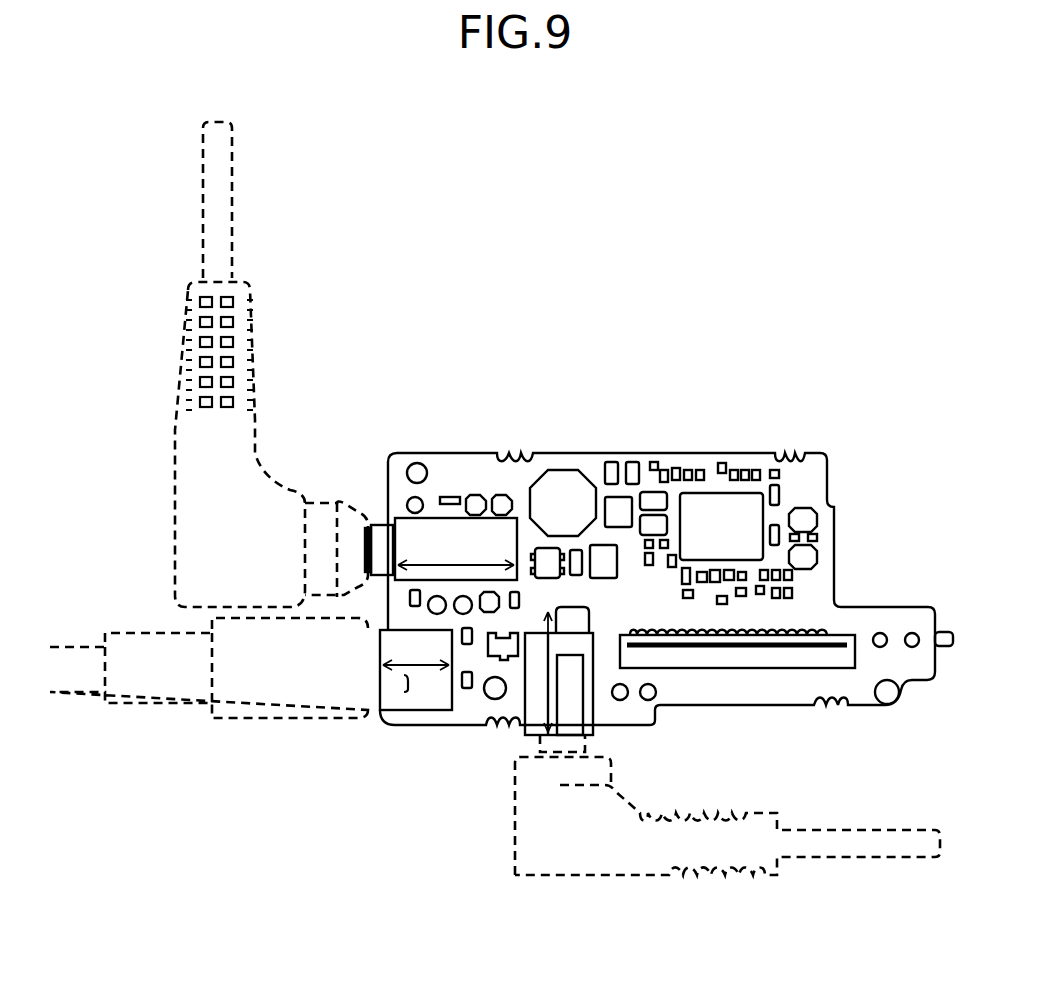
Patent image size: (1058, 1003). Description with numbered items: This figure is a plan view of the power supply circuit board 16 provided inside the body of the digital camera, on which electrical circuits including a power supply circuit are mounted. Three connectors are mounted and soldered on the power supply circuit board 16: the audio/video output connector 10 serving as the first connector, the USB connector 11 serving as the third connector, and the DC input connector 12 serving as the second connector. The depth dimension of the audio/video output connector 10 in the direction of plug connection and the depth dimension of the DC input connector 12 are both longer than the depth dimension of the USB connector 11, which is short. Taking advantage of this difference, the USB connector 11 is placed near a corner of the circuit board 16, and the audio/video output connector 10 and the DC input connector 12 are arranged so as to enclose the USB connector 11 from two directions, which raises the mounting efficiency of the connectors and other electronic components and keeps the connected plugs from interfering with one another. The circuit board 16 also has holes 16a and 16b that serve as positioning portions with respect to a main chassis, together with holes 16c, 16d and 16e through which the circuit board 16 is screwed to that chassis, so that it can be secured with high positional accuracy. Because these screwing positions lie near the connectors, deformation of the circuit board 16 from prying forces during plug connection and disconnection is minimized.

The audio/video output connector 10 is at (430, 533).
The USB connector 11 is at (428, 690).
The DC input connector 12 is at (538, 722).
The power supply circuit board 16 is at (798, 488).
The hole 16a is at (411, 499).
The hole 16b is at (392, 700).
The hole 16c is at (418, 472).
The hole 16d is at (494, 690).
The hole 16e is at (888, 693).